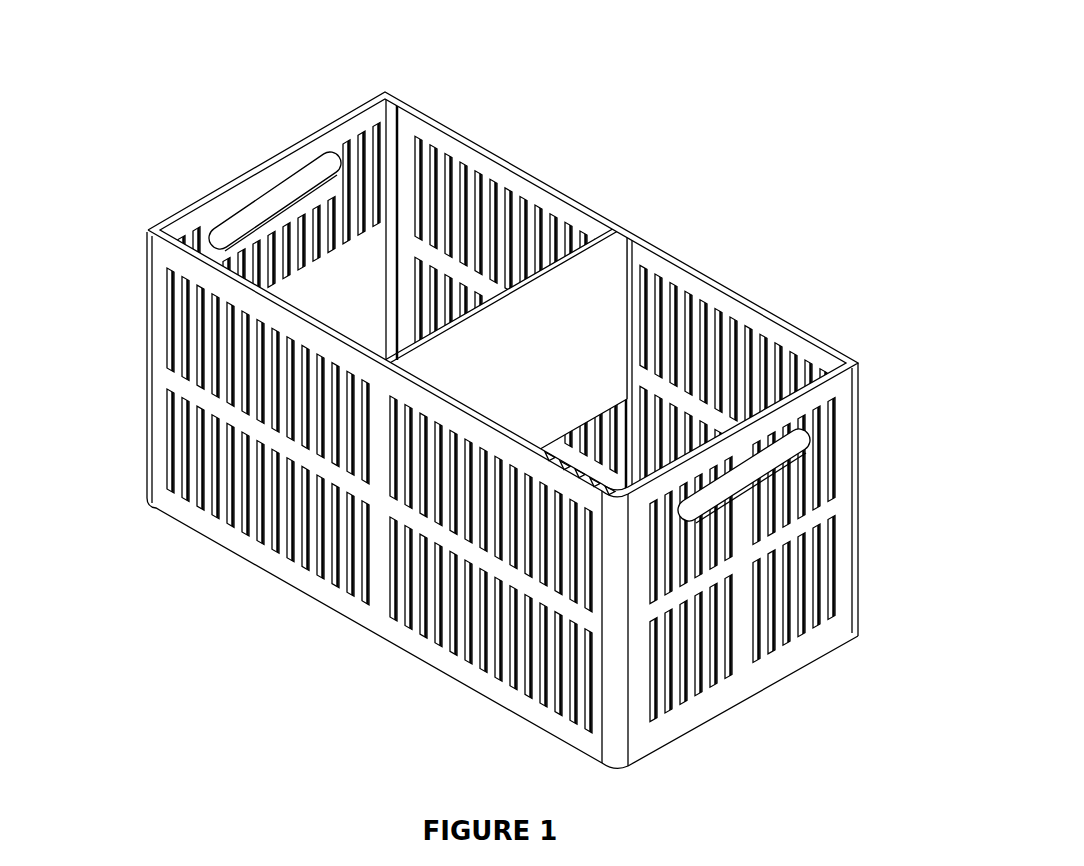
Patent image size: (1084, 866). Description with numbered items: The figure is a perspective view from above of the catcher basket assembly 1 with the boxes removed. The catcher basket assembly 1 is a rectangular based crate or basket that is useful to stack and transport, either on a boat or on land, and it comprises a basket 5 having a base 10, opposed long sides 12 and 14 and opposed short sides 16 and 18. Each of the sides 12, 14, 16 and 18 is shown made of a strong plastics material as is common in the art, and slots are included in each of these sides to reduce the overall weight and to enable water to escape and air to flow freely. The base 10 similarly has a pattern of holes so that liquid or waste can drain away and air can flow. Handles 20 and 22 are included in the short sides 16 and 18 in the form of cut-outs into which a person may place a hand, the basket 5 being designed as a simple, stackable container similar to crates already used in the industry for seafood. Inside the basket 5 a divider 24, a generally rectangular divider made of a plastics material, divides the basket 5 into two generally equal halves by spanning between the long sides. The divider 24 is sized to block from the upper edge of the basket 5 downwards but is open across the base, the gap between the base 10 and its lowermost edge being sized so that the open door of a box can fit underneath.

The catcher basket assembly 1 is at (138, 183).
The basket 5 is at (400, 92).
The base 10 is at (580, 467).
The long side 12 is at (170, 450).
The long side 14 is at (653, 255).
The short side 16 is at (307, 135).
The short side 18 is at (833, 510).
The handle 20 is at (270, 195).
The handle 22 is at (753, 468).
The divider 24 is at (585, 268).